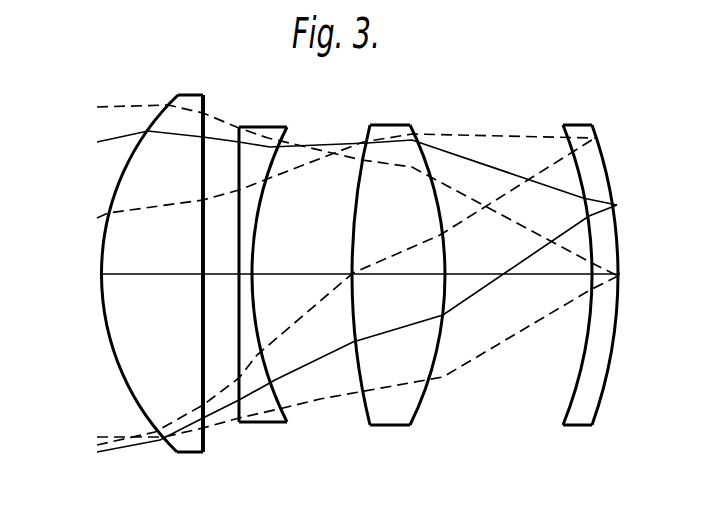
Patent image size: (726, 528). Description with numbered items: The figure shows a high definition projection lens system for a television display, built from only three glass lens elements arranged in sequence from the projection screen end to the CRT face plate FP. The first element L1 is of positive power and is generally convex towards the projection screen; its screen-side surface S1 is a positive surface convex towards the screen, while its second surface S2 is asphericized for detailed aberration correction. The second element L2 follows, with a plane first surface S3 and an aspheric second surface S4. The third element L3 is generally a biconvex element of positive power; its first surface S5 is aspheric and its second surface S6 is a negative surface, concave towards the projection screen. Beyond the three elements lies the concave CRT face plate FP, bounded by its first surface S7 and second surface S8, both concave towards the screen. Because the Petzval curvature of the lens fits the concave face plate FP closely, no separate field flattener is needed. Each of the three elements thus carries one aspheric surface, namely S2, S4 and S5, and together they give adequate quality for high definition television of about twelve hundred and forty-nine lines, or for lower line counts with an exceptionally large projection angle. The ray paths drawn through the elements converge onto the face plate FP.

The first lens element L1 is at (147, 273).
The second lens element L2 is at (252, 274).
The third lens element L3 is at (399, 275).
The CRT face plate FP is at (598, 275).
The first surface of first element S1 is at (120, 375).
The second surface of first element S2 is at (204, 343).
The first surface of second element S3 is at (238, 287).
The second surface of second element S4 is at (253, 309).
The first surface of third element S5 is at (349, 322).
The second surface of third element S6 is at (446, 320).
The first surface of face plate S7 is at (575, 387).
The second surface of face plate S8 is at (612, 377).